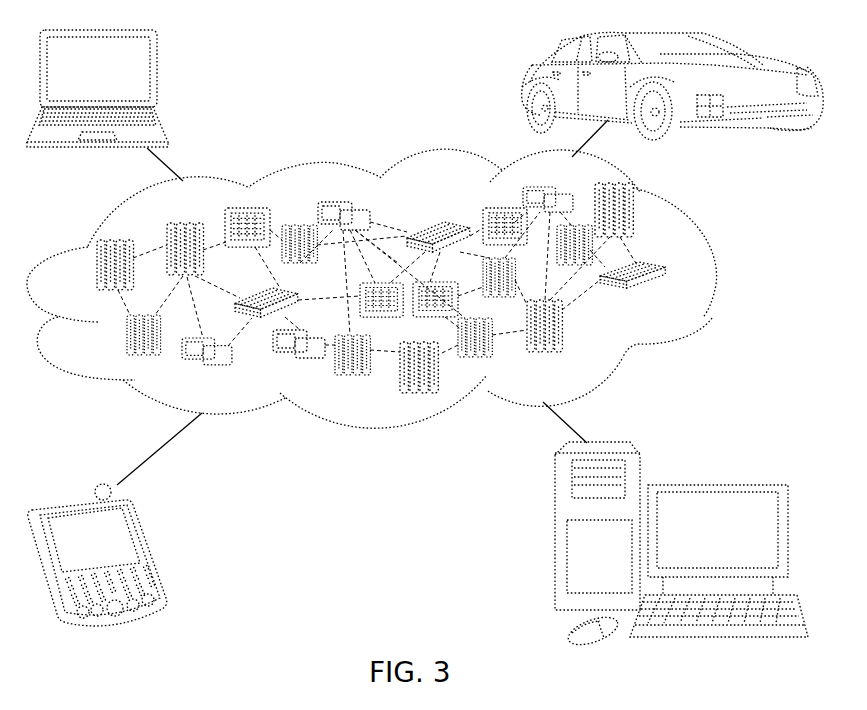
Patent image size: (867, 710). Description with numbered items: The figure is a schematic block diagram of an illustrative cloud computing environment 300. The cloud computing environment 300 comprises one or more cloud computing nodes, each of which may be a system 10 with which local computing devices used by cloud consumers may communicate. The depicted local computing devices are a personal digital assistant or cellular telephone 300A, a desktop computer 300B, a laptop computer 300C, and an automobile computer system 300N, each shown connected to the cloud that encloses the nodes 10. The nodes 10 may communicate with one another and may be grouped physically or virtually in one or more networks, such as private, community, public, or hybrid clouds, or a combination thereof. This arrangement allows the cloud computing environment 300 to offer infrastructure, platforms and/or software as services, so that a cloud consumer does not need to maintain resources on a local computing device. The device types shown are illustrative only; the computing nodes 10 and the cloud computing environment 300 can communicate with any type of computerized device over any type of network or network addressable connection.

The system 10 is at (674, 298).
The cloud computing environment 300 is at (708, 270).
The personal digital assistant (PDA) or cellular telephone 300A is at (150, 553).
The desktop computer 300B is at (715, 482).
The laptop computer 300C is at (162, 73).
The automobile computer system 300N is at (527, 88).